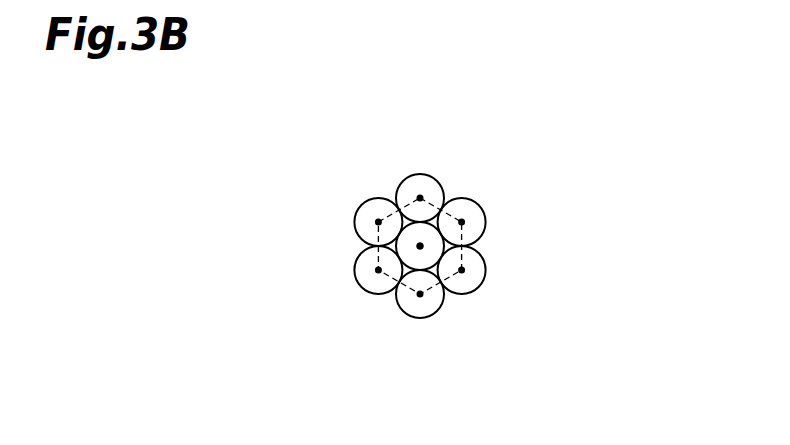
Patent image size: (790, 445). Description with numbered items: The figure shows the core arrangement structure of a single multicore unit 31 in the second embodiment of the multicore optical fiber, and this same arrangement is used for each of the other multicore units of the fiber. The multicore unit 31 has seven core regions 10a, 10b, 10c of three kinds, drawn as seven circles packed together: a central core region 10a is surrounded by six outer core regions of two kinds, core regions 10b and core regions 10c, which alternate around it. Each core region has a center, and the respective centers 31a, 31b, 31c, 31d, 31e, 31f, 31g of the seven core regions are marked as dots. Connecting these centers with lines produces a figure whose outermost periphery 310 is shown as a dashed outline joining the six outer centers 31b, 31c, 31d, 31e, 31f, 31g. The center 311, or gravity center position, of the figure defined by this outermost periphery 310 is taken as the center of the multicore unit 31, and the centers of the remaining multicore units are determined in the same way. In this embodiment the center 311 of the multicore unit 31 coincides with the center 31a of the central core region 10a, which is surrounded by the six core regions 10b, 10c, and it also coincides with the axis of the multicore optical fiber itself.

The multicore unit 31 is at (502, 222).
The outermost periphery 310 is at (462, 238).
The center of the multicore unit 311 is at (420, 246).
The center of core region 10a 31a is at (420, 246).
The center of a core region 31b is at (420, 198).
The center of a core region 31c is at (378, 222).
The center of a core region 31d is at (378, 270).
The center of a core region 31e is at (420, 294).
The center of a core region 31f is at (462, 270).
The center of a core region 31g is at (462, 222).
The core region 10a is at (420, 246).
The core region 10b is at (420, 198).
The core region 10c is at (357, 210).